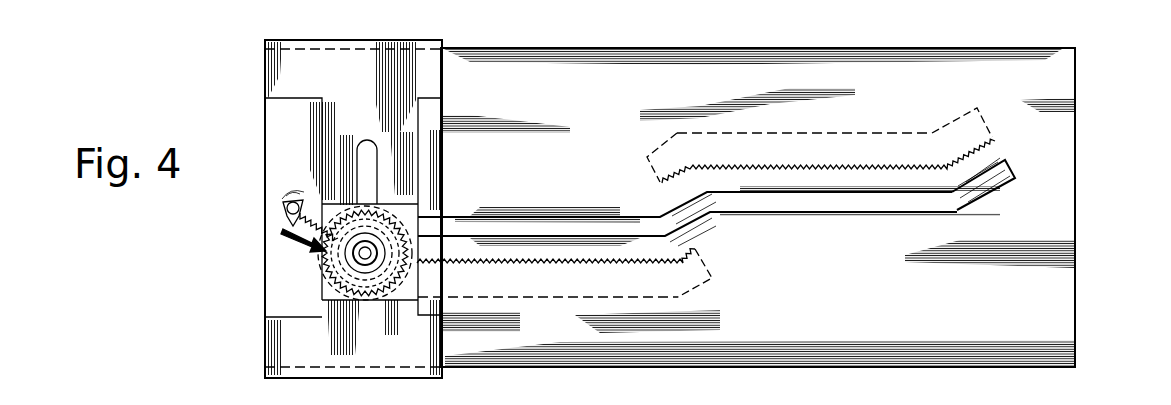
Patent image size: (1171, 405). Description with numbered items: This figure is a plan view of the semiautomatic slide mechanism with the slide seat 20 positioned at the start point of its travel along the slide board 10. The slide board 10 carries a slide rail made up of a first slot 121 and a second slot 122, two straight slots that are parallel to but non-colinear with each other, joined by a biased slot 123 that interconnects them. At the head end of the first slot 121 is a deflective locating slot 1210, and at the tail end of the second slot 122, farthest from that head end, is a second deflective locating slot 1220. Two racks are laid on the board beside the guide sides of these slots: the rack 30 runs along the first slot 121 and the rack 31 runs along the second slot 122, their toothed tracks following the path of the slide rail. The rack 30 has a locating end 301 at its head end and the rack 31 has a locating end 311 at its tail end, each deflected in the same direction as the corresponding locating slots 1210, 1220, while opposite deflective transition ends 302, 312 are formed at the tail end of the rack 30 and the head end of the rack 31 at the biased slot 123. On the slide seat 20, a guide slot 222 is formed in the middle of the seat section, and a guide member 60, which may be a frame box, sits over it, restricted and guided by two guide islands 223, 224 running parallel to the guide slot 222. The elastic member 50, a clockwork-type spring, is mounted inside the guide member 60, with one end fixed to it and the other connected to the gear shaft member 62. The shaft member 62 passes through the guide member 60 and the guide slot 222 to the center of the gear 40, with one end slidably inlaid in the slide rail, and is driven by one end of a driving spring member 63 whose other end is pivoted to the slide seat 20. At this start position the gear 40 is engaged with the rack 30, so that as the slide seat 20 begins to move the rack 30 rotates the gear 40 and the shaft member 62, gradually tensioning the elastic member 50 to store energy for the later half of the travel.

The slide board 10 is at (1055, 330).
The slide seat 20 is at (265, 337).
The guide island 223 is at (278, 130).
The guide island 224 is at (432, 98).
The guide slot 222 is at (368, 140).
The locating slot 1210 is at (405, 203).
The guide member 60 is at (336, 185).
The gear 40 is at (377, 283).
The gear shaft member 62 is at (348, 262).
The locating end 301 is at (404, 305).
The elastic member 50 is at (302, 282).
The driving spring member 63 is at (292, 240).
The rack 30 is at (562, 290).
The transition end 302 is at (697, 280).
The first slot 121 is at (510, 217).
The second slot 122 is at (843, 212).
The biased slot 123 is at (665, 207).
The locating slot 1220 is at (995, 183).
The rack 31 is at (866, 150).
The locating end 311 is at (953, 128).
The transition end 312 is at (663, 135).